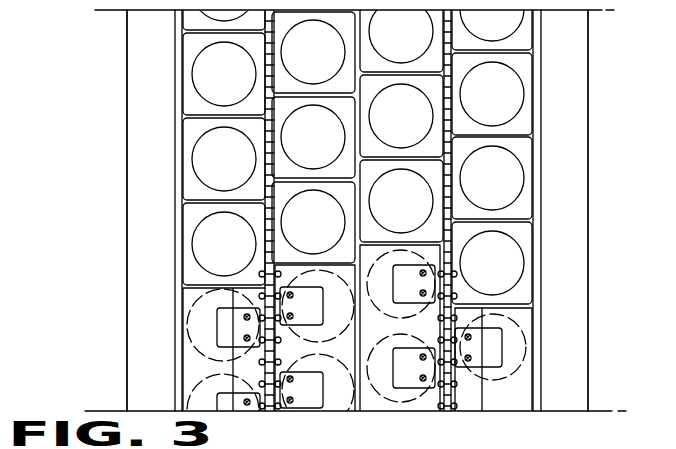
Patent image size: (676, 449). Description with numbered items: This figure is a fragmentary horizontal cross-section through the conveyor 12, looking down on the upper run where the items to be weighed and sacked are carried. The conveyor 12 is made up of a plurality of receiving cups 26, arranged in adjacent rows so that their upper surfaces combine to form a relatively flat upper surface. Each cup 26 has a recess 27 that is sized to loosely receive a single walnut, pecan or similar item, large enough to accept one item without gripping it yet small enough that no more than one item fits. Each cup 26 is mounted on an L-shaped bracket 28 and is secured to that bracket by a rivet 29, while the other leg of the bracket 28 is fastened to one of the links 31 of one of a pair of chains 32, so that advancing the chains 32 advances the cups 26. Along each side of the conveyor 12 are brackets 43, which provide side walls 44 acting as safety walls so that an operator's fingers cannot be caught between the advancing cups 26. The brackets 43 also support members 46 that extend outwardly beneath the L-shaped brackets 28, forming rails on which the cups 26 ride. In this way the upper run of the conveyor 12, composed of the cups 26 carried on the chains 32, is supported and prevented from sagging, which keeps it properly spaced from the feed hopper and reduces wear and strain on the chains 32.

The conveyor 12 is at (588, 87).
The receiving cup 26 is at (523, 238).
The recess 27 is at (512, 262).
The L-shaped bracket 28 is at (322, 326).
The rivet 29 is at (290, 319).
The link 31 is at (282, 410).
The chain 32 is at (272, 305).
The bracket 43 is at (568, 182).
The side wall 44 is at (540, 160).
The member 46 is at (523, 320).